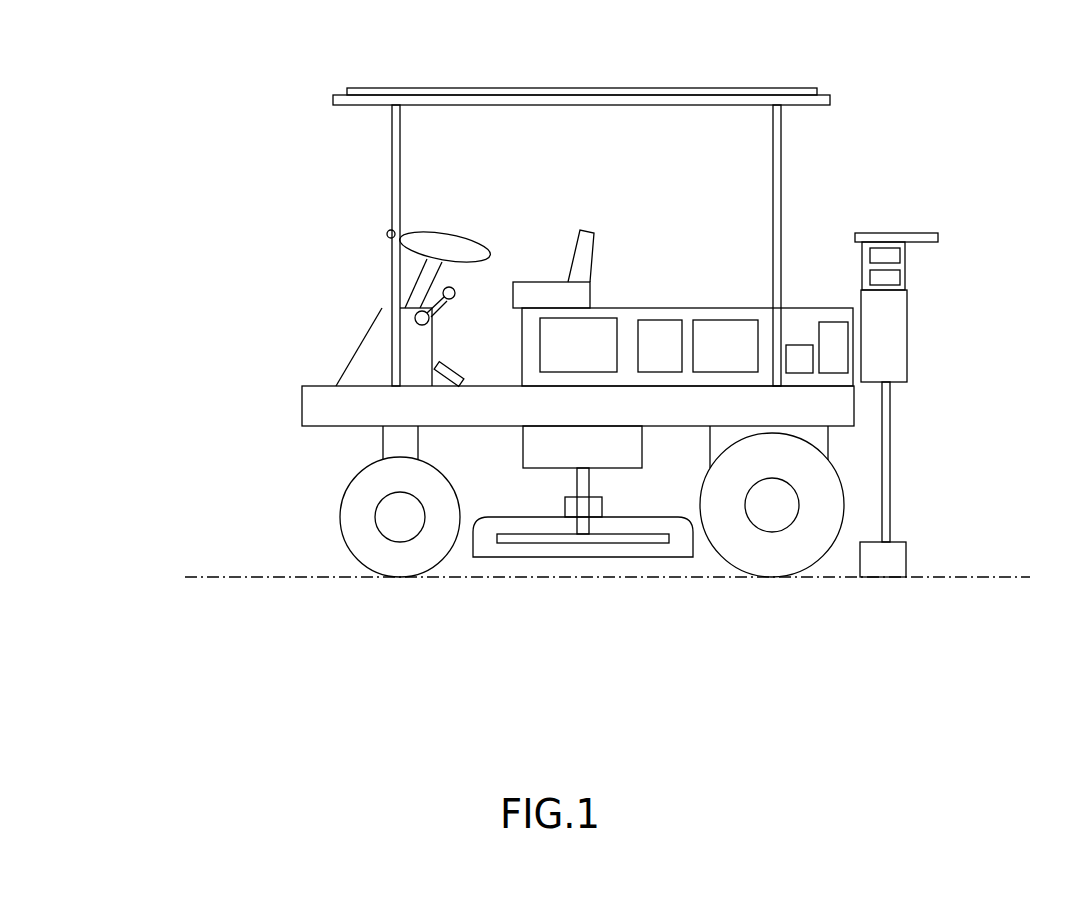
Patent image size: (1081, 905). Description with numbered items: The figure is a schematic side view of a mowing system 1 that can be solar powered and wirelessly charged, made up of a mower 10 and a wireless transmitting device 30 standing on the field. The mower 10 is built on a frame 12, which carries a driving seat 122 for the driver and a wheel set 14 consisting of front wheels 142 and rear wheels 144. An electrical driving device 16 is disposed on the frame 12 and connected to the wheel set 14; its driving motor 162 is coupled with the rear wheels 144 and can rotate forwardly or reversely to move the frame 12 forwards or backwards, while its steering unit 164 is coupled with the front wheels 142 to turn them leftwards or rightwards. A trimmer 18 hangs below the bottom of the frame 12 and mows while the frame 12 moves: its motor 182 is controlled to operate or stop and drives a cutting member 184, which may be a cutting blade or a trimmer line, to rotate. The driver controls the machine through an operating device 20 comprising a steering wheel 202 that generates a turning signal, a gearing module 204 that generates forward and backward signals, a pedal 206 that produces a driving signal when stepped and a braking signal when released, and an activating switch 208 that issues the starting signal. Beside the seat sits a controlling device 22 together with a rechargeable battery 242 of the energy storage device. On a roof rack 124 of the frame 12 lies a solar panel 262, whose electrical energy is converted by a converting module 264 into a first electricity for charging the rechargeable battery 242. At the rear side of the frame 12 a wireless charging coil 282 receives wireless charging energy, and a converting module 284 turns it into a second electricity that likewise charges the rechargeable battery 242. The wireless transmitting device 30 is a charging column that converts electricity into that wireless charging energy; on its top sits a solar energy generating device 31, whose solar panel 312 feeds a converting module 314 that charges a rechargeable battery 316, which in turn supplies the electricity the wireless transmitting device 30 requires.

The mowing system 1 is at (183, 99).
The mower 10 is at (266, 215).
The frame 12 is at (290, 394).
The wheel set 14 is at (330, 522).
The front wheels 142 is at (393, 557).
The rear wheels 144 is at (770, 557).
The electrical driving device 16 is at (840, 433).
The driving motor 162 is at (828, 448).
The steering unit 164 is at (390, 438).
The trimmer 18 is at (630, 570).
The motor 182 is at (558, 457).
The cutting member 184 is at (518, 538).
The operating device 20 is at (373, 223).
The steering wheel 202 is at (455, 243).
The gearing module 204 is at (410, 306).
The pedal 206 is at (450, 365).
The activating switch 208 is at (415, 317).
The controlling device 22 is at (662, 338).
The driving seat 122 is at (585, 255).
The roof rack 124 is at (828, 95).
The rechargeable battery 242 is at (722, 340).
The solar panel 262 is at (640, 92).
The converting module 264 is at (592, 340).
The wireless charging coil 282 is at (833, 340).
The converting module 284 is at (800, 357).
The wireless transmitting device 30 is at (918, 353).
The solar energy generating device 31 is at (901, 218).
The solar panel 312 is at (938, 238).
The converting module 314 is at (892, 258).
The rechargeable battery 316 is at (892, 280).